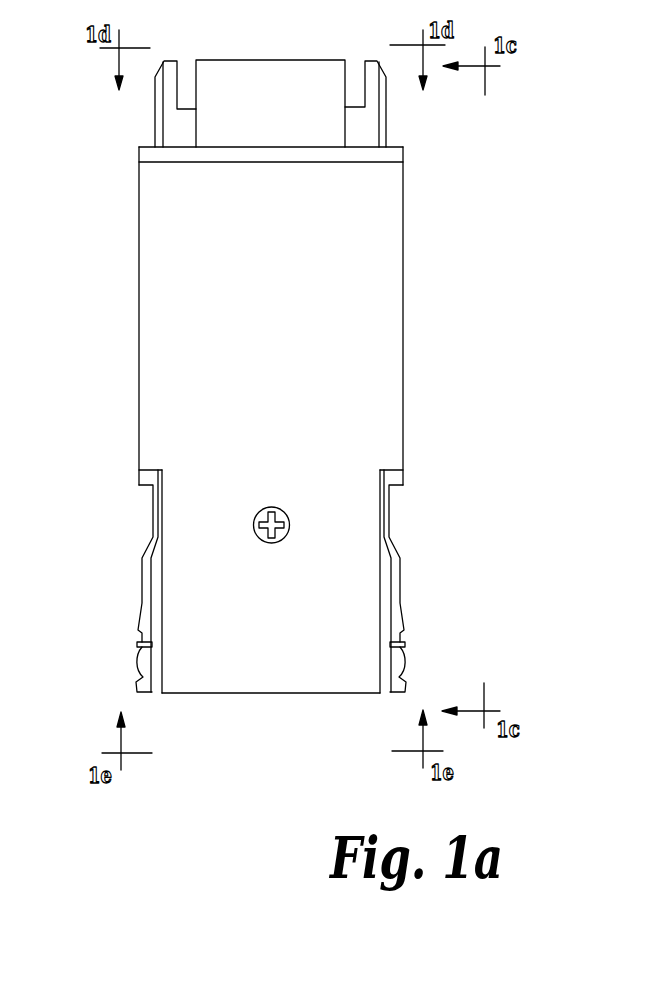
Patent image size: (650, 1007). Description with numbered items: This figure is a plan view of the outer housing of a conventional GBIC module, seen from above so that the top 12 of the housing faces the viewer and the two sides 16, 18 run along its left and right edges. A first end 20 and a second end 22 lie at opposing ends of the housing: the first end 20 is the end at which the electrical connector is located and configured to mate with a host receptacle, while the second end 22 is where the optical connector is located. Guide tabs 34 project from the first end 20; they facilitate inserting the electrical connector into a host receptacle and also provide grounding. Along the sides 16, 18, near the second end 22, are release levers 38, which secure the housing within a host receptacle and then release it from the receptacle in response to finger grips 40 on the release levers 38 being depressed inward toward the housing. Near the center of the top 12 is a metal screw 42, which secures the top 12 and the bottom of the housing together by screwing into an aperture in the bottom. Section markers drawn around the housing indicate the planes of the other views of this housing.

The top 12 is at (240, 307).
The side 16 is at (400, 260).
The side 18 is at (139, 420).
The first end 20 is at (265, 60).
The second end 22 is at (262, 693).
The guide tabs 34 is at (386, 113).
The release levers 38 is at (145, 606).
The finger grips 40 is at (140, 673).
The metal screw 42 is at (273, 508).